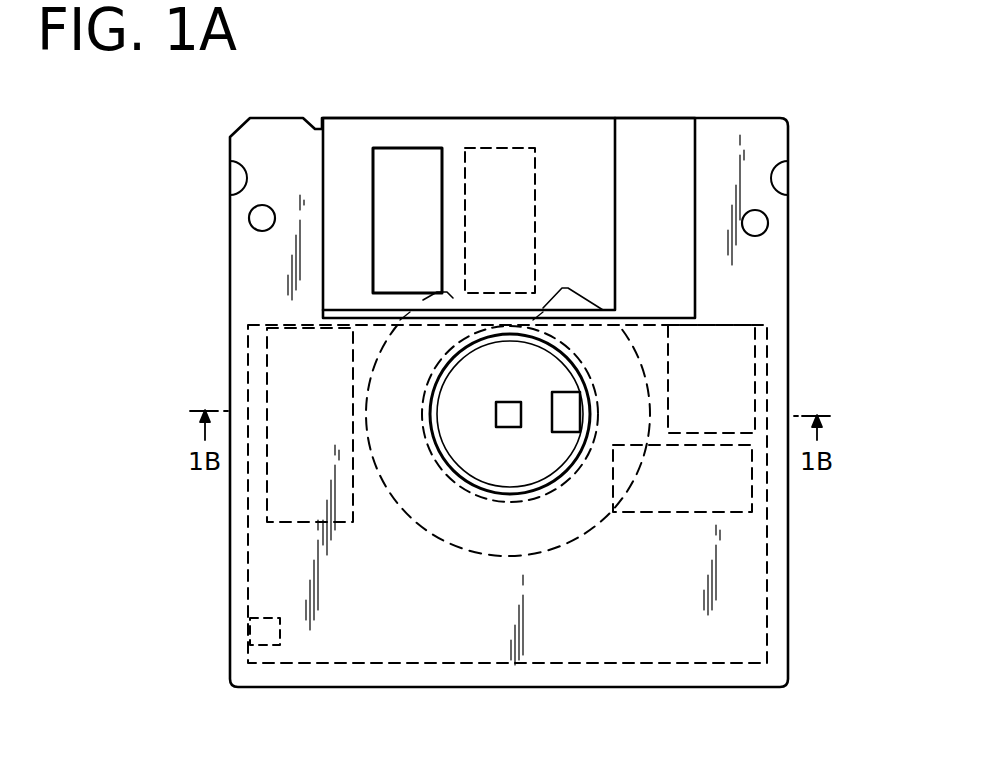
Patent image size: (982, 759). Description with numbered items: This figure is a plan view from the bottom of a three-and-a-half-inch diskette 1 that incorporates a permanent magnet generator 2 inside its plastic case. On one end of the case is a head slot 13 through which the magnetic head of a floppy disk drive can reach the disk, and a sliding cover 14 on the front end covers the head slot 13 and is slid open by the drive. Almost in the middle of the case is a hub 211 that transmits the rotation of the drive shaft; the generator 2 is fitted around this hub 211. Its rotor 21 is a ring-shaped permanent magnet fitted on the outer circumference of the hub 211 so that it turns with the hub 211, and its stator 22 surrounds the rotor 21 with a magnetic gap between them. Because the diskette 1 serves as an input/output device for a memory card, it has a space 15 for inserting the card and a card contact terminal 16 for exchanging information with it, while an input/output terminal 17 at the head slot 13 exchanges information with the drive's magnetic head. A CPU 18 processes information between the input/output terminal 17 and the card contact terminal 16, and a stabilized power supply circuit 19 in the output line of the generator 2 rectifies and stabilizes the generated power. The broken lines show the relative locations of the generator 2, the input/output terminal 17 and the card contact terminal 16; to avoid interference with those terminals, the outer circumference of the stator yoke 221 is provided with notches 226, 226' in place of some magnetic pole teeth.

The diskette 1 is at (792, 140).
The permanent magnet generator 2 is at (508, 539).
The stator yoke 221 is at (475, 552).
The head slot 13 is at (517, 175).
The input/output terminal 17 is at (493, 148).
The sliding cover 14 is at (352, 147).
The space for inserting a memory card 15 is at (712, 630).
The card contact terminal 16 is at (697, 492).
The CPU 18 is at (720, 375).
The stabilized power supply circuit 19 is at (300, 487).
The rotor 21 is at (512, 502).
The hub 211 is at (535, 462).
The stator 22 is at (419, 520).
The notch 226 is at (558, 183).
The notch 226' is at (743, 558).